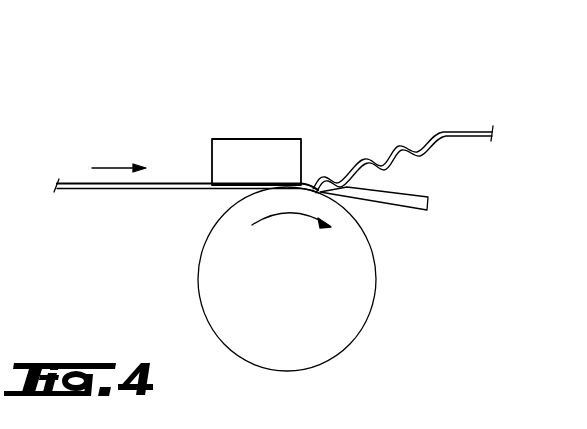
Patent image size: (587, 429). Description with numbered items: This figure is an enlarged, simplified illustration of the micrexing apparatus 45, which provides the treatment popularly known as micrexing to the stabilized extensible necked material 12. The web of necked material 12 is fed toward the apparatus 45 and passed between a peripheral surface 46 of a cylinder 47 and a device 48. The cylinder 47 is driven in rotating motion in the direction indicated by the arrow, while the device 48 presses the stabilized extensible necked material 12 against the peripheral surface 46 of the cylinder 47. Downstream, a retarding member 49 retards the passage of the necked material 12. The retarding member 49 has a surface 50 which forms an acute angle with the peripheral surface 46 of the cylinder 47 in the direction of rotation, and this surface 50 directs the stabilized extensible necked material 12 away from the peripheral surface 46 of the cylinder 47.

The stabilized necked material 12 is at (158, 190).
The apparatus 45 is at (306, 131).
The peripheral surface 46 is at (373, 252).
The cylinder 47 is at (333, 345).
The device 48 is at (264, 150).
The retarding member 49 is at (428, 207).
The surface 50 is at (341, 182).